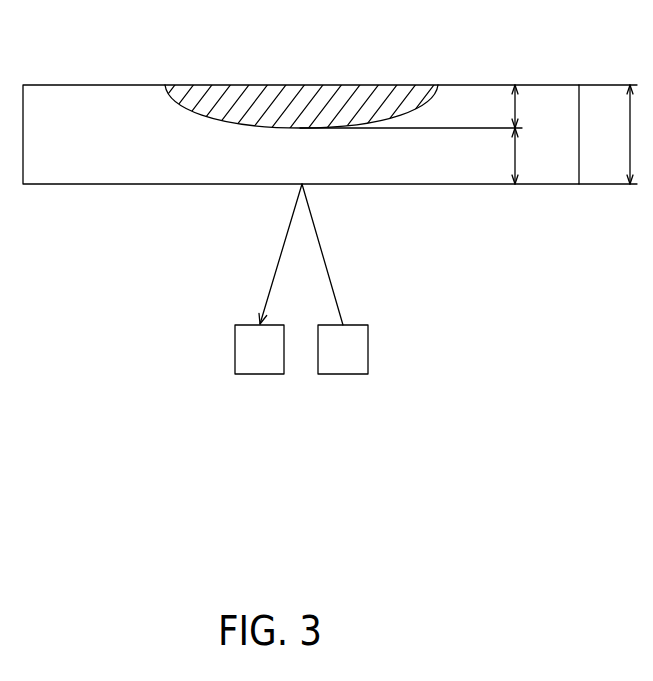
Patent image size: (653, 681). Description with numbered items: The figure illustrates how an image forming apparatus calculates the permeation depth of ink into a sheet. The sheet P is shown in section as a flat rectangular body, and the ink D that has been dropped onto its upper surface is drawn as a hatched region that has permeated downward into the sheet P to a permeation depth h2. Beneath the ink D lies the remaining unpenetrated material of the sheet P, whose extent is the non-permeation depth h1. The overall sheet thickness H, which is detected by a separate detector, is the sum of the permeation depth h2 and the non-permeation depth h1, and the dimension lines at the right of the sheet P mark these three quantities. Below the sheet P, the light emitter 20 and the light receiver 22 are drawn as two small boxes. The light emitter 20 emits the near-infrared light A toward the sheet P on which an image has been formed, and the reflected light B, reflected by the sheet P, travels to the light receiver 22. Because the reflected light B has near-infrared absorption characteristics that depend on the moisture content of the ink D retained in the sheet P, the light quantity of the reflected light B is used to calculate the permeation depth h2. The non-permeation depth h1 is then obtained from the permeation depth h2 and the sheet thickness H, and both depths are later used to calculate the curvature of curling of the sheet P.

The sheet P is at (115, 84).
The ink D is at (338, 100).
The non-permeation depth h1 is at (531, 156).
The permeation depth h2 is at (532, 106).
The sheet thickness H is at (615, 134).
The near-infrared light A is at (316, 233).
The reflected light B is at (287, 233).
The light emitter 20 is at (368, 342).
The light receiver 22 is at (235, 343).